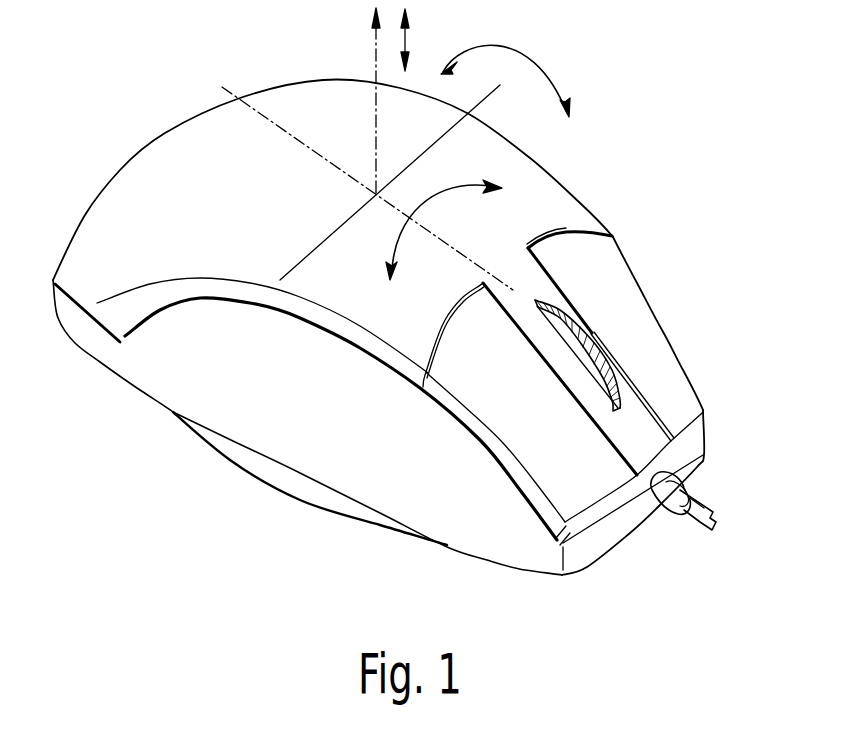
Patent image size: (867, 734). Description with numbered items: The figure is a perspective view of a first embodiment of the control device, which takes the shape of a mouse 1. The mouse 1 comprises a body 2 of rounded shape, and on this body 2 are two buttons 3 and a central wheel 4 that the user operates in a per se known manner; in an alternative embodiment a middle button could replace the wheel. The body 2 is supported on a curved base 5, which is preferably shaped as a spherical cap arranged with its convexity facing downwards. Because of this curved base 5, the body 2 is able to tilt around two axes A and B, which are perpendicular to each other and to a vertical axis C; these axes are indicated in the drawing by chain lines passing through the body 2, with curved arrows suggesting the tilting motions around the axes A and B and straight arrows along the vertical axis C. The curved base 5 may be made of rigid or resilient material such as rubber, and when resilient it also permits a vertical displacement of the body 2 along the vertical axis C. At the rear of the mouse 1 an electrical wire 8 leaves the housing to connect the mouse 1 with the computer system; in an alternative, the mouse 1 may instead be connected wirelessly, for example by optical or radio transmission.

The mouse 1 is at (633, 204).
The body 2 is at (160, 160).
The buttons 3 is at (660, 357).
The central wheel 4 is at (580, 337).
The curved base 5 is at (317, 498).
The electrical wire 8 is at (692, 502).
The axis A is at (265, 115).
The axis B is at (338, 228).
The vertical axis C is at (372, 70).